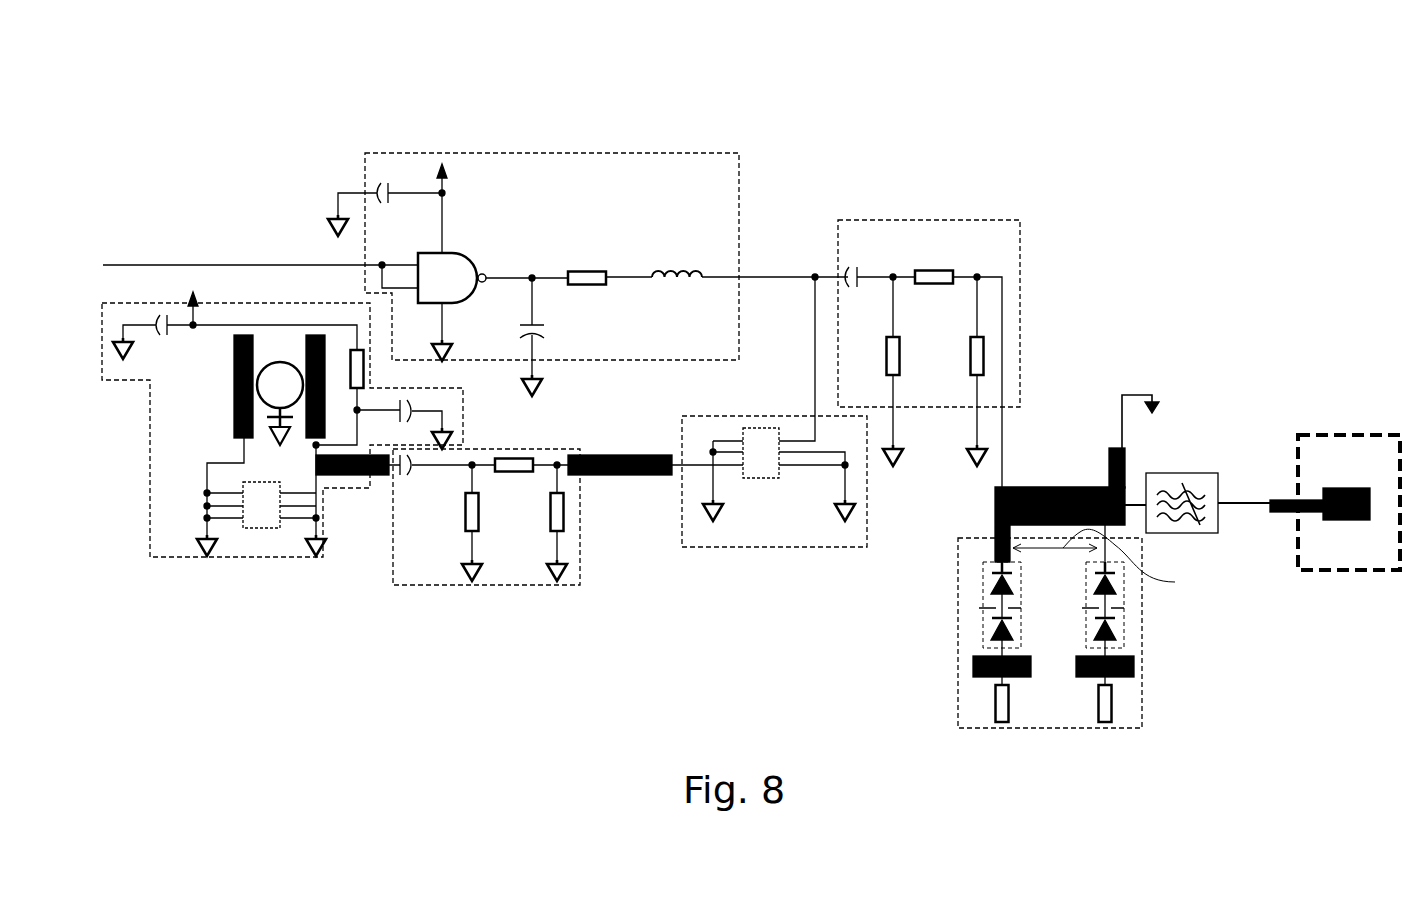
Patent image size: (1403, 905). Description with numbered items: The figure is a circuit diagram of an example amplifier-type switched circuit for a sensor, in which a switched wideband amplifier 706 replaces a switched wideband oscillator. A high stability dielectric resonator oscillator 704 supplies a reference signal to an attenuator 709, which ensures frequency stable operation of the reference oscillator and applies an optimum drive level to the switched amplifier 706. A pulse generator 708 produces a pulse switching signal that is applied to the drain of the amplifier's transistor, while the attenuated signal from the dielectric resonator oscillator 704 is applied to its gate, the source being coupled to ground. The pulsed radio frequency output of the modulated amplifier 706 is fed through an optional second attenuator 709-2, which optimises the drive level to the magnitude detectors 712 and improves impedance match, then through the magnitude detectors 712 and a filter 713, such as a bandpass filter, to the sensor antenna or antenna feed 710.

The dielectric resonator oscillator 704 is at (270, 558).
The switched wideband amplifier 706 is at (777, 548).
The pulse generator 708 is at (551, 153).
The attenuator 709 is at (533, 588).
The second attenuator 709-2 is at (958, 220).
The antenna feed 710 is at (1331, 435).
The magnitude detectors 712 is at (958, 712).
The filter 713 is at (1162, 473).